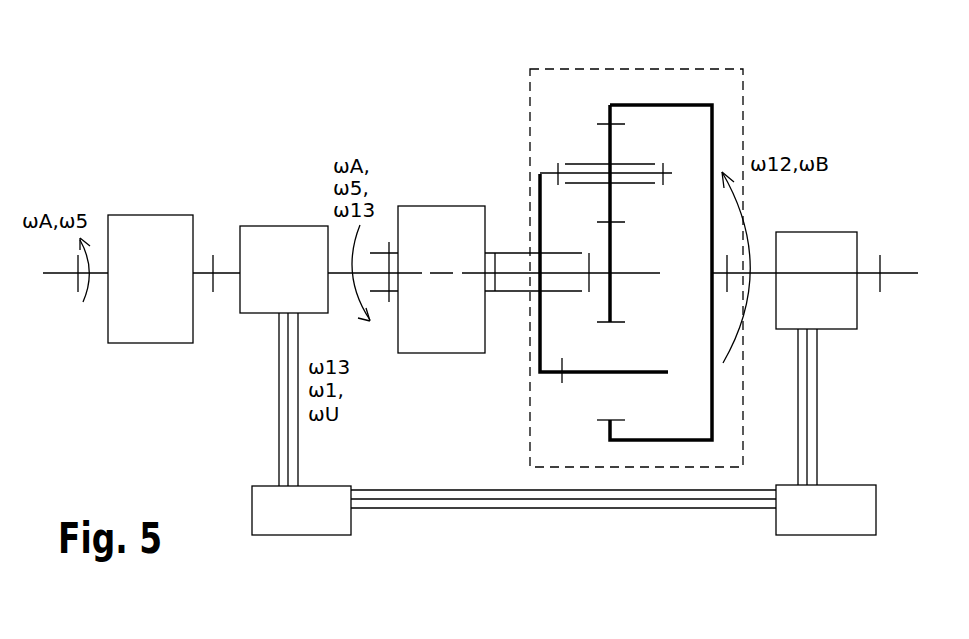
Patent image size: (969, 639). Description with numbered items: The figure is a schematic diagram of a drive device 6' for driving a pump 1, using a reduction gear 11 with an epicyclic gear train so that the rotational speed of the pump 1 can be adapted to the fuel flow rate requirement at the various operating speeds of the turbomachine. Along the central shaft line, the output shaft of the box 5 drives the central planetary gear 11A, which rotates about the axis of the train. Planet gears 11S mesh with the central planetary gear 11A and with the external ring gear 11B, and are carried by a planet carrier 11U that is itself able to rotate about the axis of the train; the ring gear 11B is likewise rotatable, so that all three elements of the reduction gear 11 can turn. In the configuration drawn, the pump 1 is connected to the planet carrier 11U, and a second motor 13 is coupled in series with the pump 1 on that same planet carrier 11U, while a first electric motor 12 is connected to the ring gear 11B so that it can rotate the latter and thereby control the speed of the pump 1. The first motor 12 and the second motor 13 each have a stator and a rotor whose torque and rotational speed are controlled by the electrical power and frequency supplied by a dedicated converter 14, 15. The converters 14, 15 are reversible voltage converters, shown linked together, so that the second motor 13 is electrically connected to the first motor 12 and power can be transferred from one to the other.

The drive device 6' is at (480, 166).
The box 5 is at (137, 243).
The second motor 13 is at (272, 245).
The pump 1 is at (438, 232).
The reduction gear 11 is at (577, 54).
The ring gear 11B is at (671, 104).
The planet gears 11S is at (612, 211).
The central planetary gear 11A is at (612, 258).
The planet carrier 11U is at (540, 185).
The first electric motor 12 is at (815, 262).
The converter 15 is at (310, 500).
The converter 14 is at (815, 515).